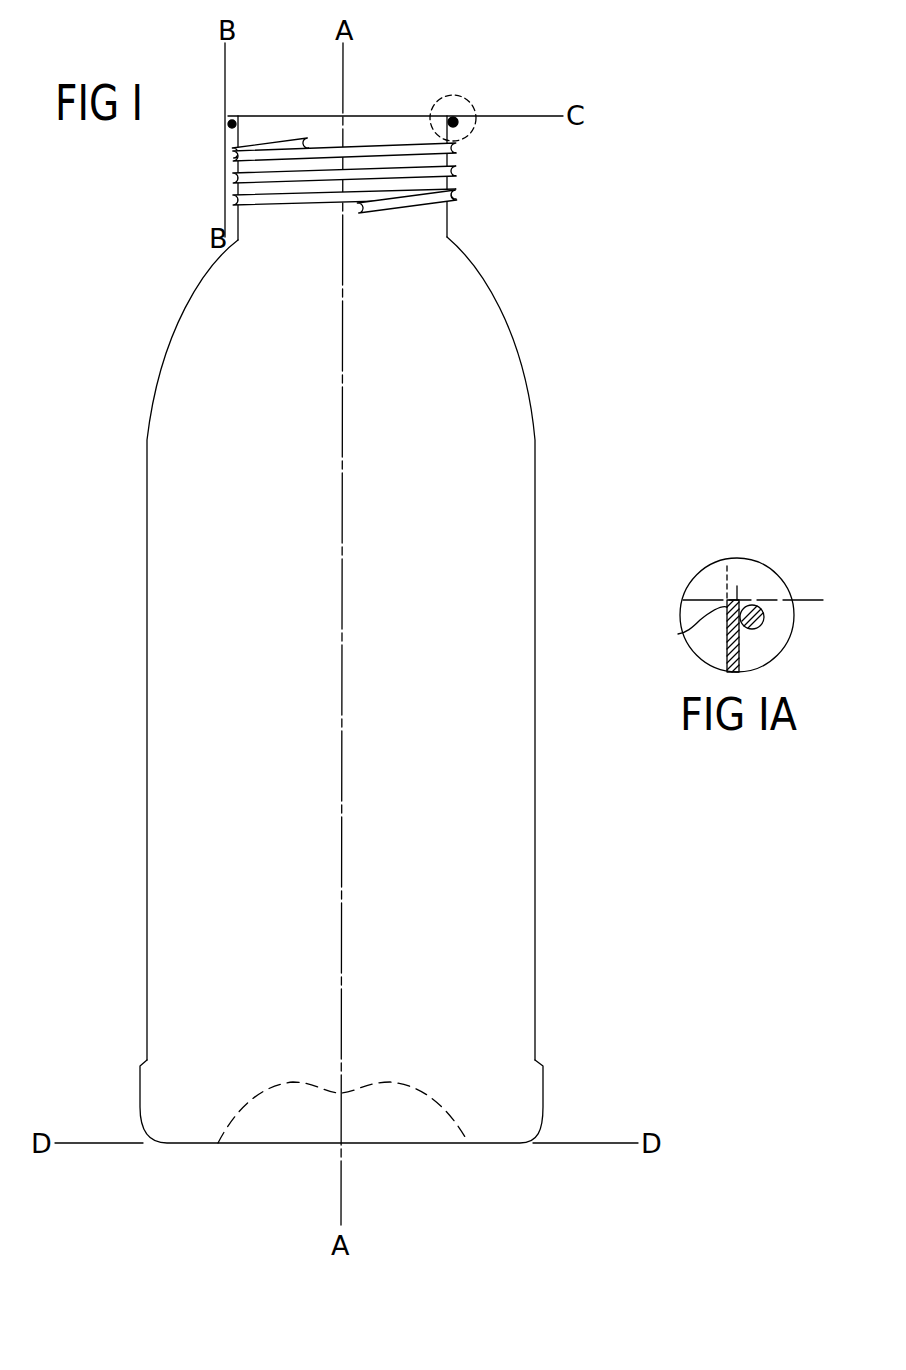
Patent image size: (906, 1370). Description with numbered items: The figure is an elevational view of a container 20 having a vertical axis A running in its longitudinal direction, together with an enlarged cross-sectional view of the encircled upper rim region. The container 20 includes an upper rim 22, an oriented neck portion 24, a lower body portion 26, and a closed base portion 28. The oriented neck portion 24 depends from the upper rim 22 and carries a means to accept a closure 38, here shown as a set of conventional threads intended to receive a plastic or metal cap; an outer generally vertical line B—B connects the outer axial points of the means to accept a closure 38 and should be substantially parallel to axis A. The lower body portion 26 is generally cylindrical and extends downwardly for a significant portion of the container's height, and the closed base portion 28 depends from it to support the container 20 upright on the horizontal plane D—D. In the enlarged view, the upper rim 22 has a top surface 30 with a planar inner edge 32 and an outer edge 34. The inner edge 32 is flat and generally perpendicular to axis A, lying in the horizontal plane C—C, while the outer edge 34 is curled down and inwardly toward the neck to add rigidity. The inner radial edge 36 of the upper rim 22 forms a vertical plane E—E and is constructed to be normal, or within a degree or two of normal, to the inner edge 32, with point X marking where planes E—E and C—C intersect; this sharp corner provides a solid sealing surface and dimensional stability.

In FIG. 1, the container 20 is at (355, 590).
In FIG. 1, the upper rim 22 is at (455, 118).
In FIG. 1, the oriented neck portion 24 is at (447, 208).
In FIG. 1, the lower body portion 26 is at (147, 710).
In FIG. 1, the closed base portion 28 is at (542, 1117).
In FIG. 1A, the top surface 30 is at (741, 593).
In FIG. 1A, the inner edge 32 is at (734, 598).
In FIG. 1A, the outer edge 34 is at (765, 617).
In FIG. 1A, the inner radial edge 36 is at (678, 634).
In FIG. 1, the means to accept a closure 38 is at (460, 174).